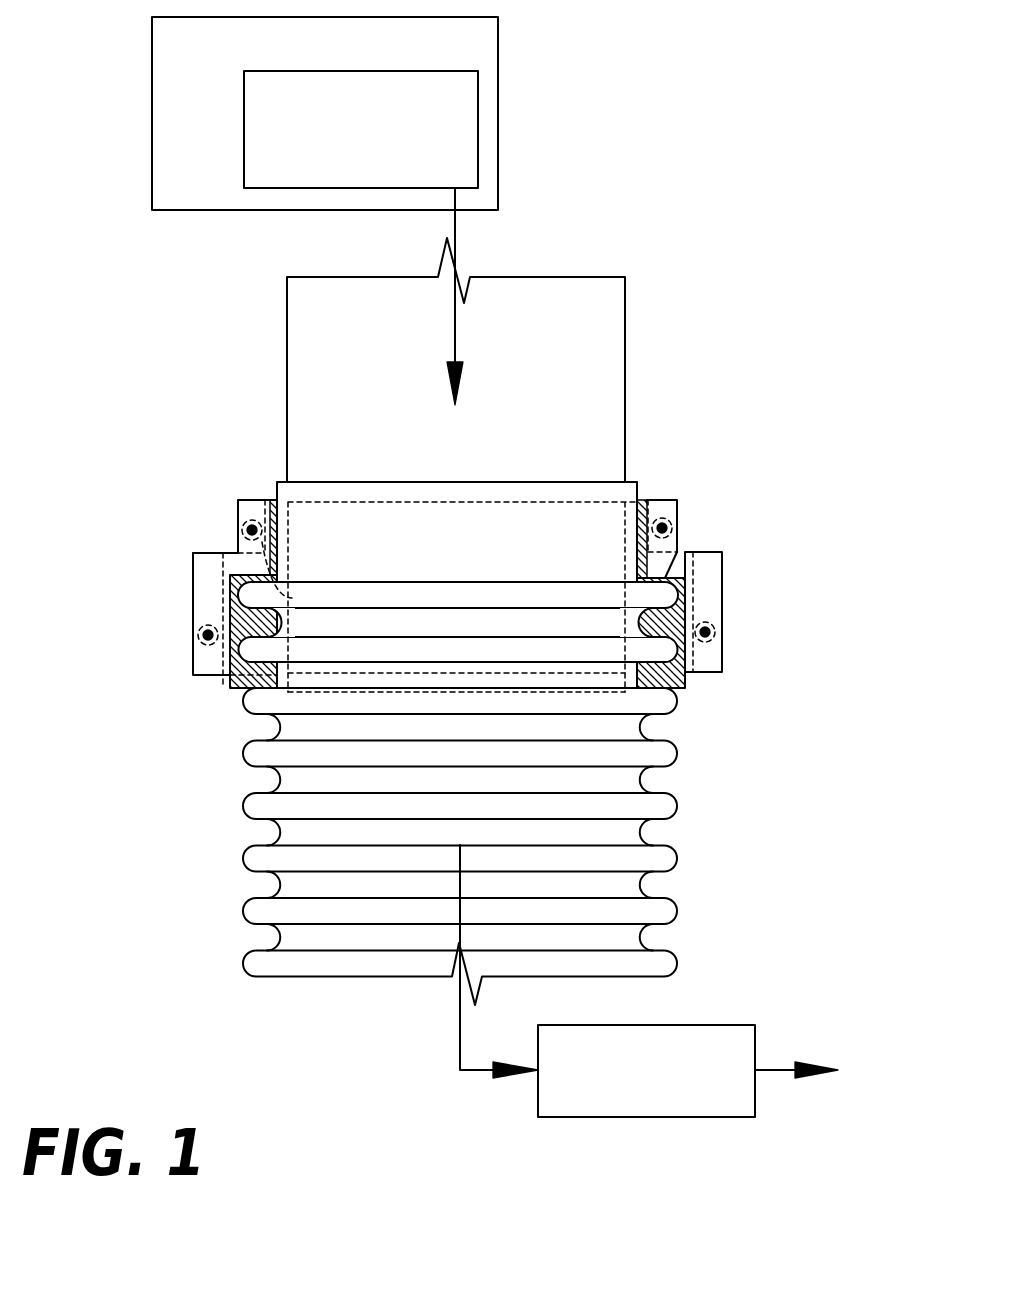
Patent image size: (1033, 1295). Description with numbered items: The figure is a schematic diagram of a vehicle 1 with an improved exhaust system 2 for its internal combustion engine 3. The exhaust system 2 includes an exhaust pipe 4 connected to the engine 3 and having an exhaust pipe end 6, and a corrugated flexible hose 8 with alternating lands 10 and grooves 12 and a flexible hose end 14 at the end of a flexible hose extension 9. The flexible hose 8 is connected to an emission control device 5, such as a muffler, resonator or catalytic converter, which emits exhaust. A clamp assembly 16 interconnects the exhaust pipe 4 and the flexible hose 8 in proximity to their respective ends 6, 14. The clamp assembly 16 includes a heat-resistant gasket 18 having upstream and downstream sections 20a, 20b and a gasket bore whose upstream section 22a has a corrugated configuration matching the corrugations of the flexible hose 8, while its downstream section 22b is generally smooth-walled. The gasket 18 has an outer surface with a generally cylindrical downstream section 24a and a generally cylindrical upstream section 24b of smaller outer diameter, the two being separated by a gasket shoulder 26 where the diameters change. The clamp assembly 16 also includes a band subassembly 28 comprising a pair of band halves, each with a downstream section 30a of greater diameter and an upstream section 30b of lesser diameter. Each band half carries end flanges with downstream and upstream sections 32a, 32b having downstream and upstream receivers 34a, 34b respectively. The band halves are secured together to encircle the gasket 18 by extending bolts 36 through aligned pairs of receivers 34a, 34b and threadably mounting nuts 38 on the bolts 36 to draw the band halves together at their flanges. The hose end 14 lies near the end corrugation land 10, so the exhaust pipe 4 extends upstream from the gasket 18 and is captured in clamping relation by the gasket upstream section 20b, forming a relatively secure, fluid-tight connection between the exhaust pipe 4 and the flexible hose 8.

The vehicle 1 is at (152, 32).
The exhaust system 2 is at (168, 389).
The internal combustion engine 3 is at (244, 95).
The exhaust pipe 4 is at (625, 277).
The emission control device 5 is at (693, 1025).
The exhaust pipe end 6 is at (492, 692).
The corrugated flexible hose 8 is at (342, 975).
The flexible hose extension 9 is at (455, 546).
The land 10 is at (498, 883).
The groove 12 is at (641, 777).
The flexible hose end 14 is at (488, 482).
The clamp assembly 16 is at (677, 500).
The gasket 18 is at (685, 689).
The gasket upstream section 20a is at (657, 637).
The gasket upstream section 20b is at (637, 538).
The gasket bore upstream section 22a is at (272, 652).
The gasket bore downstream section 22b is at (283, 533).
The gasket outer surface downstream section 24a is at (223, 684).
The gasket outer surface upstream section 24b is at (267, 500).
The gasket shoulder 26 is at (667, 571).
The band subassembly 28 is at (722, 667).
The band half downstream section 30a is at (202, 675).
The band half upstream section 30b is at (238, 505).
The end flange downstream section 32a is at (192, 612).
The end flange upstream section 32b is at (263, 498).
The downstream receiver 34a is at (199, 634).
The upstream receiver 34b is at (245, 530).
The bolt 36 is at (277, 572).
The nut 38 is at (292, 598).